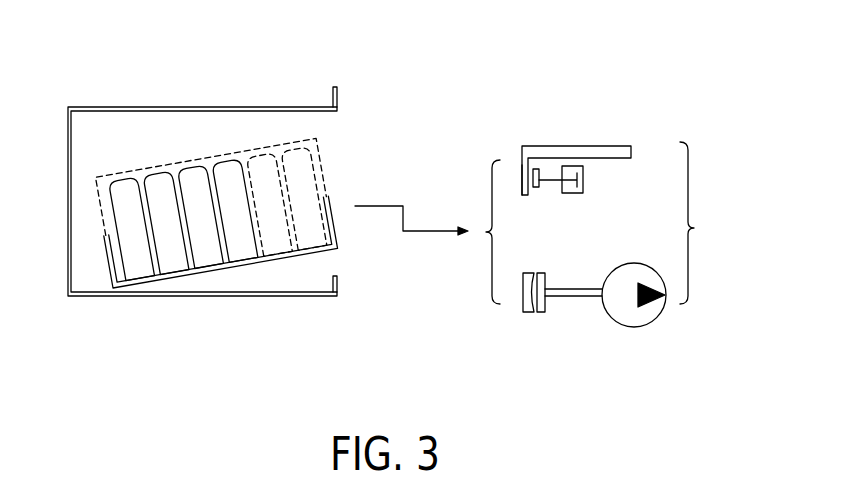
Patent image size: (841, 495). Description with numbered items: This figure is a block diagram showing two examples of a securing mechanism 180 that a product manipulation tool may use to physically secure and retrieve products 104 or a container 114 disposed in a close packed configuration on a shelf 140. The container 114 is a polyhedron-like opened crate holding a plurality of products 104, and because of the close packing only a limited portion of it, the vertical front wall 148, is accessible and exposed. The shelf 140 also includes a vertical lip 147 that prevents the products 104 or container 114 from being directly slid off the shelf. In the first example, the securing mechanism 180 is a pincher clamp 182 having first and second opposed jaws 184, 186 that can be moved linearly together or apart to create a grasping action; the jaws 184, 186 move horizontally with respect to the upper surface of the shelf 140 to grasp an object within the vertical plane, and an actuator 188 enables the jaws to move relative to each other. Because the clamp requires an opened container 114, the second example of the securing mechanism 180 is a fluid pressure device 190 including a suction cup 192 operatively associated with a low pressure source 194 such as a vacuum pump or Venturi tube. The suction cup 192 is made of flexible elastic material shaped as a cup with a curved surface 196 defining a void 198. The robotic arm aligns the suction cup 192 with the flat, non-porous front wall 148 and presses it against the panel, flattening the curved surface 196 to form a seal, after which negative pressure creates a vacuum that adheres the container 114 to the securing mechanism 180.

The products 104 is at (228, 158).
The container 114 is at (233, 270).
The shelf 140 is at (302, 297).
The vertical lip 147 is at (337, 283).
The front wall 148 is at (338, 207).
The securing mechanism 180 is at (588, 250).
The pincher clamp 182 is at (567, 120).
The first jaw 184 is at (522, 183).
The second jaw 186 is at (537, 187).
The actuator 188 is at (583, 180).
The fluid pressure device 190 is at (567, 358).
The suction cup 192 is at (545, 312).
The low pressure source 194 is at (655, 320).
The curved surface 196 is at (528, 312).
The void 198 is at (508, 305).